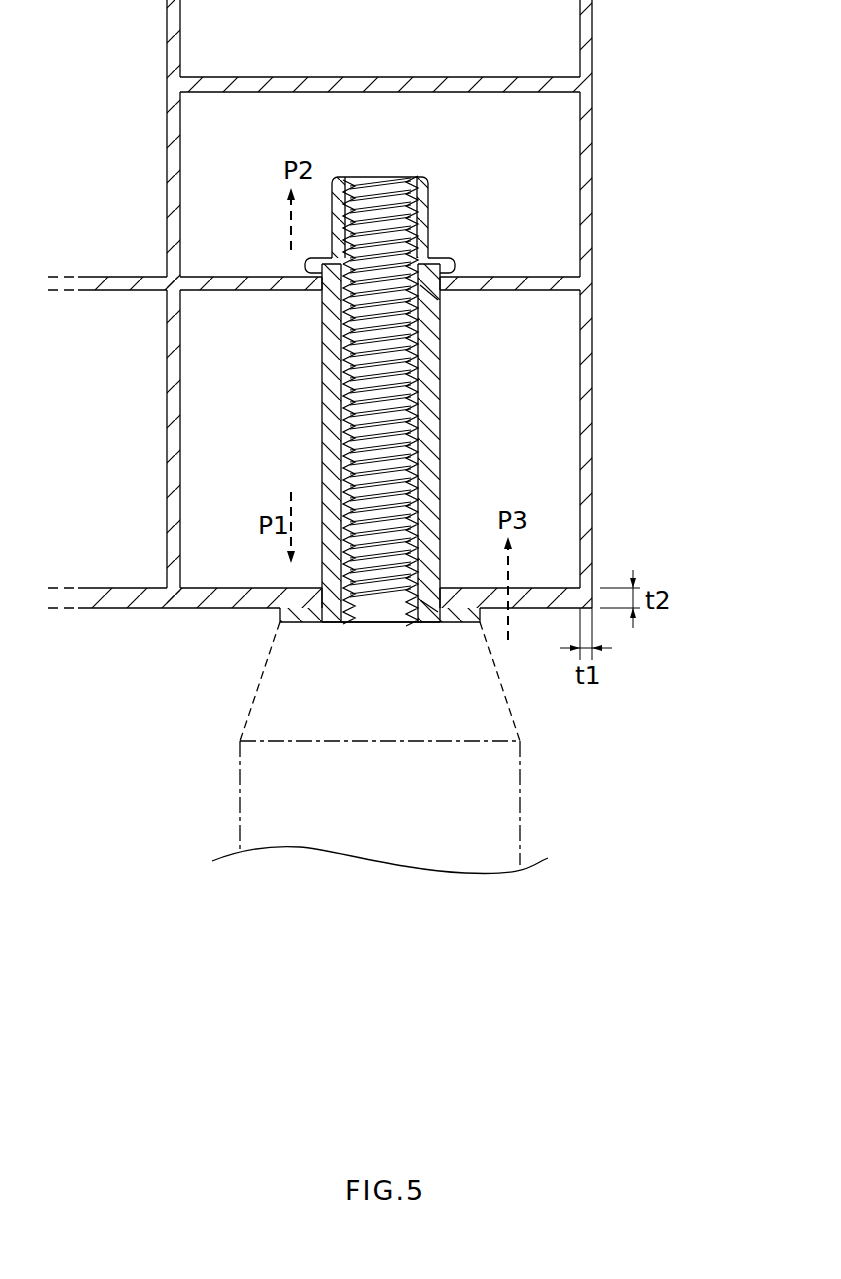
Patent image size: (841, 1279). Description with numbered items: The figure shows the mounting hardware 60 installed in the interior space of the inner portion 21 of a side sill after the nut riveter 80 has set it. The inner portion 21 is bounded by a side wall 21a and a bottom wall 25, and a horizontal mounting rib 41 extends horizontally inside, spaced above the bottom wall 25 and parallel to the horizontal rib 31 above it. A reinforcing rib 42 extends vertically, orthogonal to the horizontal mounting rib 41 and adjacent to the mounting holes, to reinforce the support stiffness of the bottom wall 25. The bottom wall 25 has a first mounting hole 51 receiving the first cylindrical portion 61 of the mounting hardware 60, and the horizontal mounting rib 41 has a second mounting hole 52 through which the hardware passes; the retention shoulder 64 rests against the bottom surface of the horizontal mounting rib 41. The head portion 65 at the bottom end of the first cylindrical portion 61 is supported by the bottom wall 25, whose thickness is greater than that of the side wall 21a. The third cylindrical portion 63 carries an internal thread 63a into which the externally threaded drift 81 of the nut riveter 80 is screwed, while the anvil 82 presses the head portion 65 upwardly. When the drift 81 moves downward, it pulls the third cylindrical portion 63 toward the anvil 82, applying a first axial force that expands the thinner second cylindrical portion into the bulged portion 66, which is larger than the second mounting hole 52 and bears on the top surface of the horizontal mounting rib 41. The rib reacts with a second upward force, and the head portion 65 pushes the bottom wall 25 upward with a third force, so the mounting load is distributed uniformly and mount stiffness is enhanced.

The inner portion 21 is at (376, 335).
The side wall 21a is at (593, 445).
The bottom wall 25 is at (208, 608).
The horizontal rib 31 is at (377, 77).
The horizontal mounting rib 41 is at (204, 277).
The reinforcing rib 42 is at (167, 447).
The first mounting hole 51 is at (436, 603).
The second mounting hole 52 is at (422, 287).
The mounting hardware 60 is at (390, 450).
The first cylindrical portion 61 is at (441, 446).
The third cylindrical portion 63 is at (377, 260).
The internal thread 63a is at (405, 196).
The retention shoulder 64 is at (305, 283).
The head portion 65 is at (462, 622).
The bulged portion 66 is at (470, 268).
The nut riveter 80 is at (400, 748).
The drift 81 is at (400, 478).
The anvil 82 is at (277, 688).